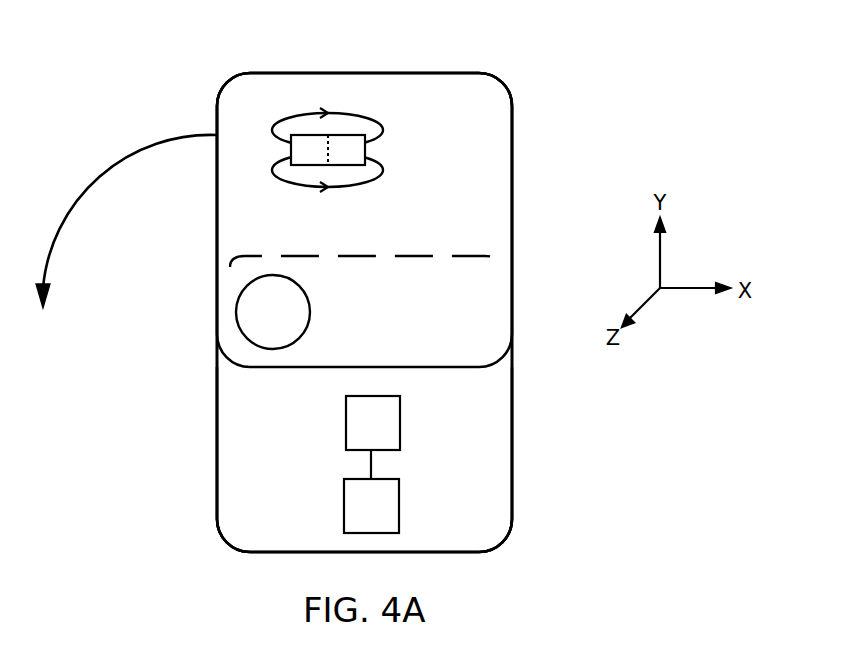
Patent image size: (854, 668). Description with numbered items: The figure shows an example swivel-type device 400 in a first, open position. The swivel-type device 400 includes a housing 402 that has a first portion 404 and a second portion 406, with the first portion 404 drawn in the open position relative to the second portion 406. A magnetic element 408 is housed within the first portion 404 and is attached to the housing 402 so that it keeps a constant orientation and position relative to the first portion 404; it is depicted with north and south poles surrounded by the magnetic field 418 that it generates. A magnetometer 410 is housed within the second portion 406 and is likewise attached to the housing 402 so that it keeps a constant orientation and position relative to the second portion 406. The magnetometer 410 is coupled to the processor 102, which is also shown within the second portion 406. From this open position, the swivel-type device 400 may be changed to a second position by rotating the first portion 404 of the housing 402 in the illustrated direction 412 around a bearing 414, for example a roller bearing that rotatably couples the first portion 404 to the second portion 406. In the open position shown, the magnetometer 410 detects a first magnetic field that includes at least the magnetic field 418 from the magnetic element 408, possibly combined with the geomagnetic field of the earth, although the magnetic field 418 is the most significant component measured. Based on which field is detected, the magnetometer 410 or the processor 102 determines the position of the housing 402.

The swivel-type device 400 is at (172, 43).
The housing 402 is at (512, 307).
The first portion 404 is at (227, 208).
The second portion 406 is at (228, 428).
The magnetic element 408 is at (343, 134).
The magnetometer 410 is at (400, 425).
The direction 412 is at (60, 223).
The bearing 414 is at (307, 297).
The magnetic field 418 is at (380, 177).
The processor 102 is at (343, 503).